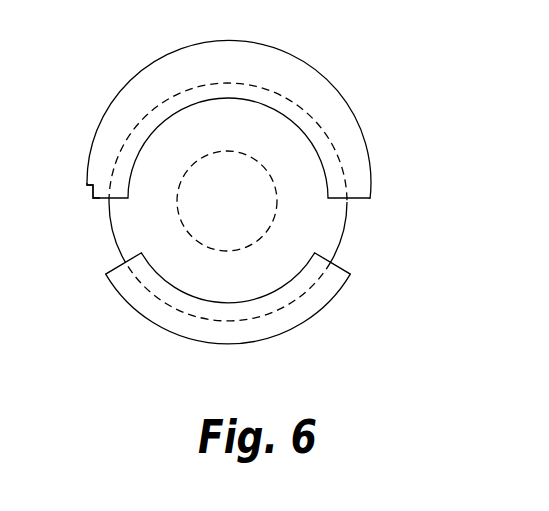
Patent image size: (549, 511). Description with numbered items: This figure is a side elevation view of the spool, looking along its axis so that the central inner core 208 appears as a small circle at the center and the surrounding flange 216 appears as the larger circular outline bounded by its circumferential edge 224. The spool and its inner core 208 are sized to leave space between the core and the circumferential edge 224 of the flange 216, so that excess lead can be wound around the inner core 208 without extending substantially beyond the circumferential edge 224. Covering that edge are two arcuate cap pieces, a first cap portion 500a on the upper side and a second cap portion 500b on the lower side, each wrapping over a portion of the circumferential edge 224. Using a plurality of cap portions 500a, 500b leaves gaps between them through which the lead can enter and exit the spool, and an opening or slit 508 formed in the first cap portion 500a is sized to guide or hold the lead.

The first cap portion 500a is at (257, 63).
The second cap portion 500b is at (310, 320).
The circumferential edge 224 is at (320, 130).
The inner core 208 is at (278, 186).
The flange 216 is at (222, 122).
The opening or slit 508 is at (88, 191).